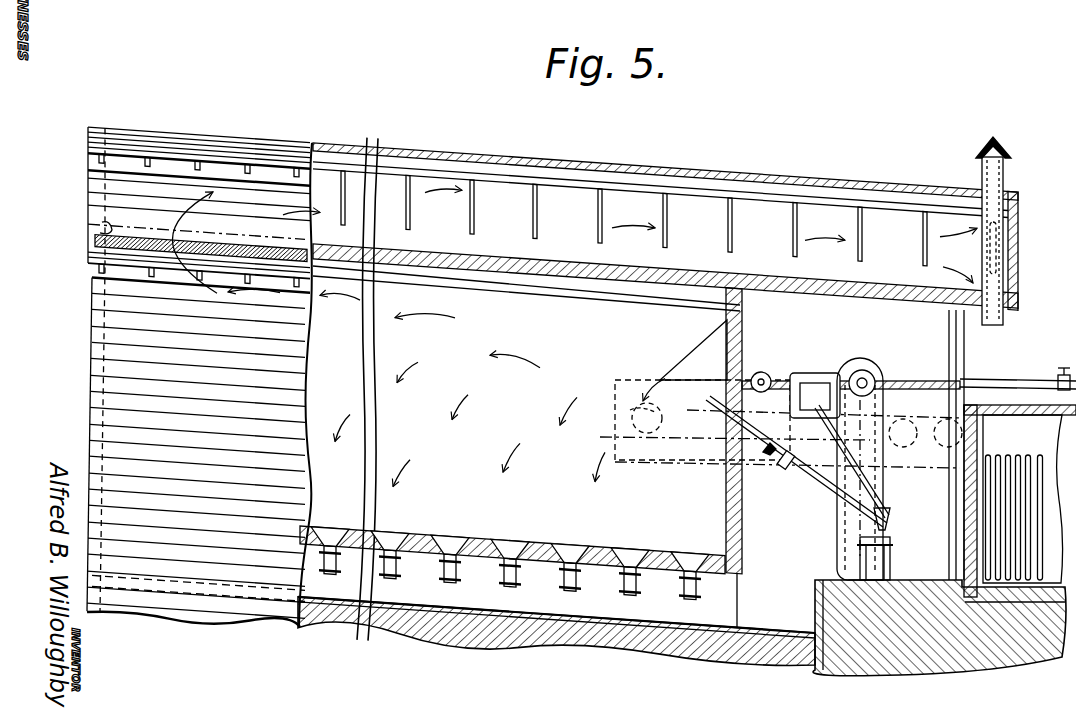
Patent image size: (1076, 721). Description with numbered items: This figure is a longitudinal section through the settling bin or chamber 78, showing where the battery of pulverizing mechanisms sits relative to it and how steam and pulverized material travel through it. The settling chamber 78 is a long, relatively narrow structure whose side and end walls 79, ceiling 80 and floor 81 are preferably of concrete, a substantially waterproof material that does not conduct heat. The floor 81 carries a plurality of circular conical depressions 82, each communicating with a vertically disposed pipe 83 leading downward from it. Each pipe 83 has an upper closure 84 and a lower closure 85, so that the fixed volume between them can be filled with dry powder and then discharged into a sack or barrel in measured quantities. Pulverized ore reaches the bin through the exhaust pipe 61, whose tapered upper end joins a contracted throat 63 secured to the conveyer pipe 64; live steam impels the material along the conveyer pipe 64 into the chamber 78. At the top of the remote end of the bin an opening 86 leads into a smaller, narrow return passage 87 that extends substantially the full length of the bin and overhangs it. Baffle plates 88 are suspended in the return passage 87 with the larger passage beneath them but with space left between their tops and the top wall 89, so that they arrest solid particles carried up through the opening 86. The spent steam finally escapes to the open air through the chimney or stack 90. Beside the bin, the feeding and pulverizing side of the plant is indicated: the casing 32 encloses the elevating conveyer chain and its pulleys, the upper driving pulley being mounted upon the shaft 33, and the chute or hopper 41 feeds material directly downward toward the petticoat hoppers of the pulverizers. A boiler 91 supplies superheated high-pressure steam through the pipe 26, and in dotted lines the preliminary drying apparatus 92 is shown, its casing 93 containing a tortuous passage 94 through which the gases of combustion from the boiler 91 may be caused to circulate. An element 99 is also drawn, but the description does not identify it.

The pipe 26 is at (1006, 381).
The casing 32 is at (883, 456).
The shaft 33 is at (874, 380).
The chute or hopper 41 is at (838, 424).
The exhaust pipe 61 is at (845, 488).
The contracted portion or throat 63 is at (784, 466).
The conveyer pipe 64 is at (768, 454).
The settling chamber 78 is at (492, 398).
The side and end walls 79 is at (98, 347).
The ceiling 80 is at (592, 268).
The bottom or floor 81 is at (600, 549).
The conical depressions 82 is at (452, 538).
The pipes 83 is at (552, 572).
The upper valve or closure 84 is at (402, 560).
The lower valve or closure 85 is at (488, 566).
The opening 86 is at (100, 222).
The return passage or chamber 87 is at (634, 218).
The baffle plates 88 is at (730, 222).
The top wall 89 is at (612, 172).
The chimney or stack 90 is at (1004, 178).
The boiler 91 is at (693, 350).
The drying apparatus 92 is at (1023, 499).
The casing 93 is at (630, 424).
The tortuous passage 94 is at (640, 418).
The rollers 99 is at (940, 424).